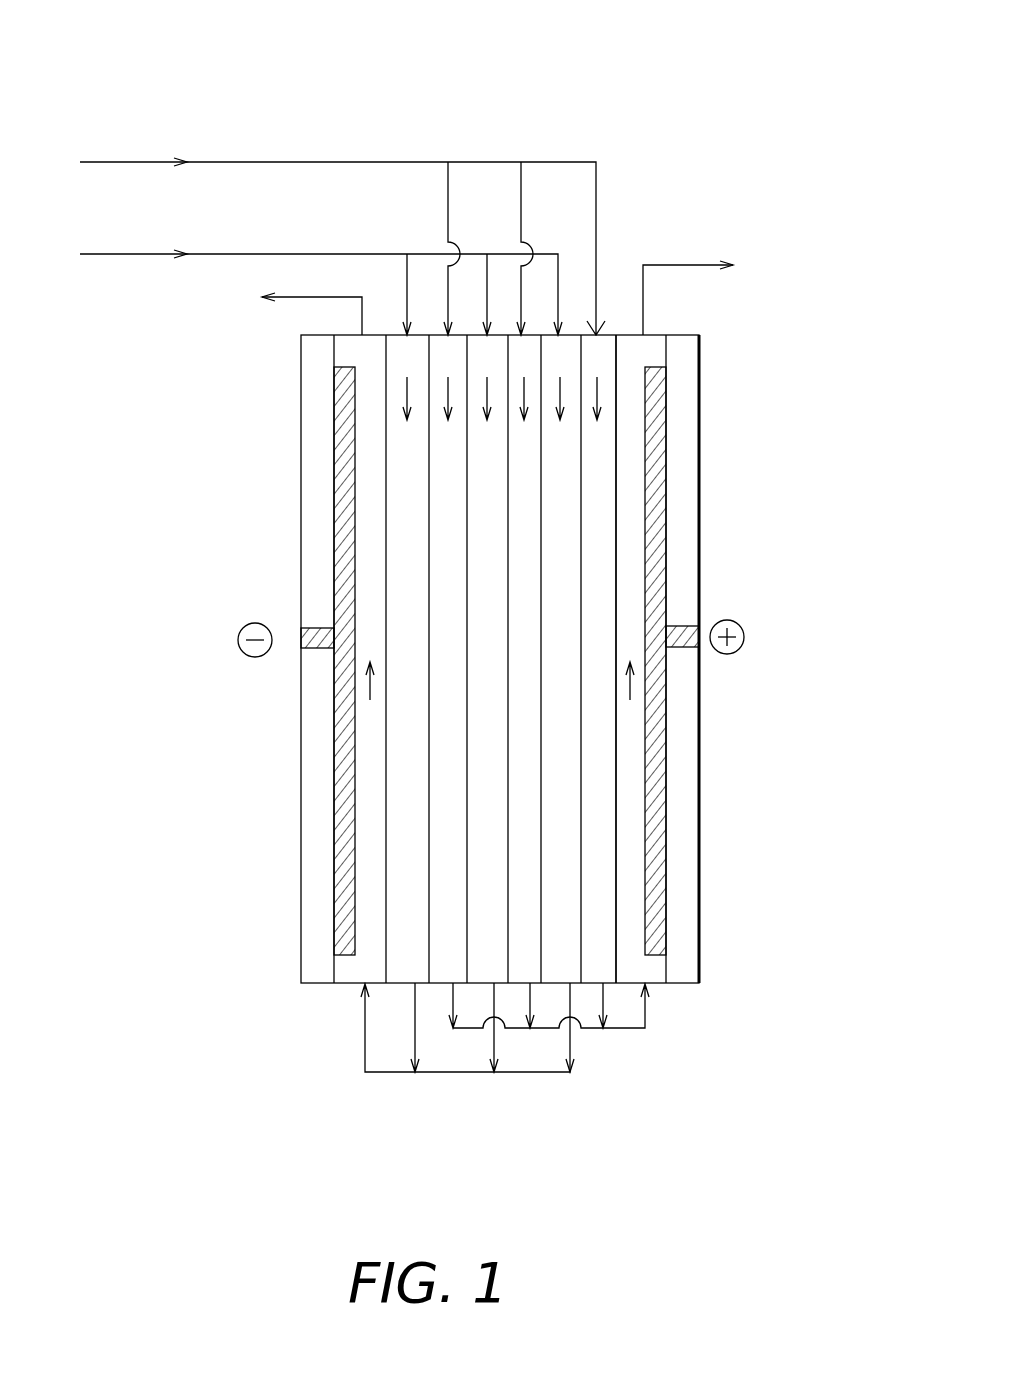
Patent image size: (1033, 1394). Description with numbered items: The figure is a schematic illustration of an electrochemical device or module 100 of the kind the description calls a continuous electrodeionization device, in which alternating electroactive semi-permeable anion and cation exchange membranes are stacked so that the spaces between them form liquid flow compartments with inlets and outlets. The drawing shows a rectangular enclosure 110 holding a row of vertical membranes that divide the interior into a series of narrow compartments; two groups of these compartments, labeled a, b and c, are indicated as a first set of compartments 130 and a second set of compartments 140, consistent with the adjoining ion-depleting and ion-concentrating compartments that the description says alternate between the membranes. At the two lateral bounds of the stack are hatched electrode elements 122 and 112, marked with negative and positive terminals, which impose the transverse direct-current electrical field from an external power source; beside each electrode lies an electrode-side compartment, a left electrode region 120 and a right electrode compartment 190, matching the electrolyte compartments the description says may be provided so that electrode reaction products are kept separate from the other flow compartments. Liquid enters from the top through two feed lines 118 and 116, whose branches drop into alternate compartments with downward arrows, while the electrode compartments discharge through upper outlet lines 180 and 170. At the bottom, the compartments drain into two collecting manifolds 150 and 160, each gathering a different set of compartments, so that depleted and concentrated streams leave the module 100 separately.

The electrodeionization apparatus 100 is at (265, 52).
The housing 110 is at (646, 350).
The cathode electrode 112 is at (665, 400).
The second feed inlet line 116 is at (290, 253).
The first feed inlet line 118 is at (283, 161).
The anode compartment 120 is at (343, 350).
The anode electrode 122 is at (333, 532).
The depleting compartments 130 is at (462, 578).
The concentrating compartments 140 is at (571, 709).
The concentrate outlet manifold 150 is at (620, 1030).
The product outlet manifold 160 is at (445, 1073).
The electrode outlet line 170 is at (660, 265).
The electrode outlet line 180 is at (292, 298).
The electrode compartment 190 is at (583, 941).